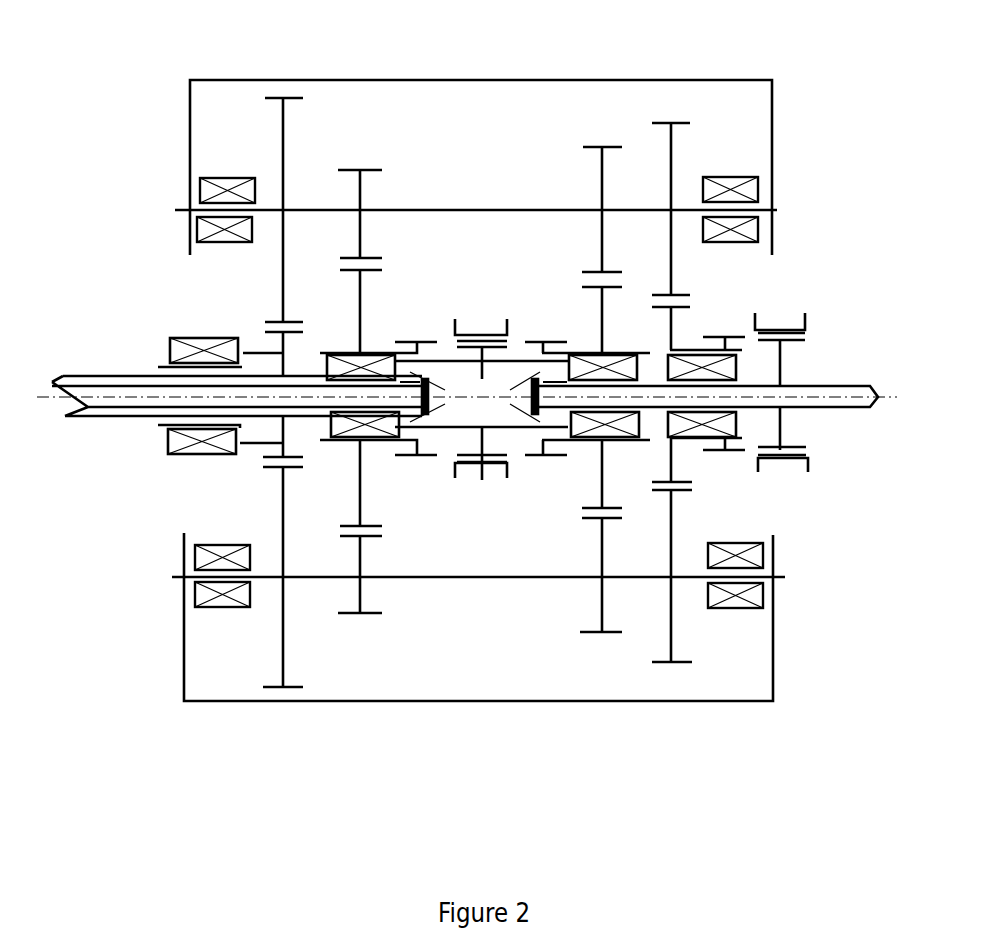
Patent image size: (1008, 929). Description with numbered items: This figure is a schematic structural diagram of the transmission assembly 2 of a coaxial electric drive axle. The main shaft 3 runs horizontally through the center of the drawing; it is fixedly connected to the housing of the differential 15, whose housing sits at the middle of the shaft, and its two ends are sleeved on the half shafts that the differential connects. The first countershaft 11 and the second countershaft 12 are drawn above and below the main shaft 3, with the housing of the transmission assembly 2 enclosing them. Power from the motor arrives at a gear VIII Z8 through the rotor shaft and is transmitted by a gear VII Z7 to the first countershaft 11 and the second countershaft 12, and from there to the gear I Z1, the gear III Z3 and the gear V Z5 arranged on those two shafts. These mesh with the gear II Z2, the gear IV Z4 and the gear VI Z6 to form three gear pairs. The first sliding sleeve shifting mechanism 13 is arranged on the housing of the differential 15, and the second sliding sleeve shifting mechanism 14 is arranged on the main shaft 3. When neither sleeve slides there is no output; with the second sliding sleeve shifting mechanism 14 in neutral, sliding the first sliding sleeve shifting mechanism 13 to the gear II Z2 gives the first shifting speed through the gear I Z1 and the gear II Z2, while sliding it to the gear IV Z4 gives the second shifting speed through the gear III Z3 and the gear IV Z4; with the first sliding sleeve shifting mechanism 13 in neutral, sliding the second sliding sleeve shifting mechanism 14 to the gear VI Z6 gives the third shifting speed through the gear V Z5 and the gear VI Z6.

The transmission assembly 2 is at (393, 92).
The main shaft 3 is at (92, 420).
The first countershaft 11 is at (186, 206).
The second countershaft 12 is at (777, 210).
The first sliding sleeve shifting mechanism 13 is at (482, 319).
The second sliding sleeve shifting mechanism 14 is at (772, 325).
The differential 15 is at (440, 360).
The gear I Z1 is at (377, 392).
The gear II Z2 is at (378, 398).
The gear III Z3 is at (588, 389).
The gear IV Z4 is at (587, 398).
The gear V Z5 is at (660, 392).
The gear VI Z6 is at (687, 394).
The gear VII Z7 is at (298, 392).
The gear VIII Z8 is at (244, 420).